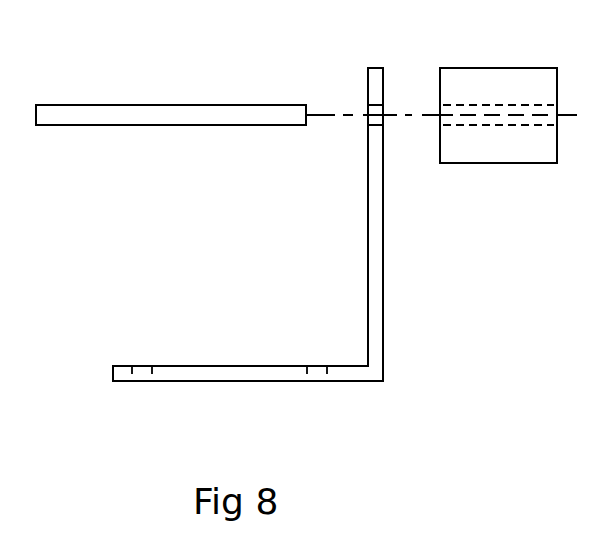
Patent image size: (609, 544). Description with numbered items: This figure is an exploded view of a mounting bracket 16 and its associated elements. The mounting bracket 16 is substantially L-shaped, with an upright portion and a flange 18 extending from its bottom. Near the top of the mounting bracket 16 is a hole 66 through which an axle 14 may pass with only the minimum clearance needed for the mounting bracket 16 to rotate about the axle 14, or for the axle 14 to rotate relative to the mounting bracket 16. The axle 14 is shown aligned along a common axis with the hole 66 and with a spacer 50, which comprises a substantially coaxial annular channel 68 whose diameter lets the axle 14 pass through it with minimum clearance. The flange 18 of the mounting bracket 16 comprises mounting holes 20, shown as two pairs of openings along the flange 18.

The axle 14 is at (152, 105).
The mounting bracket 16 is at (384, 280).
The flange 18 is at (267, 381).
The mounting holes 20 is at (140, 381).
The spacer 50 is at (512, 68).
The hole 66 is at (366, 114).
The annular channel 68 is at (487, 118).